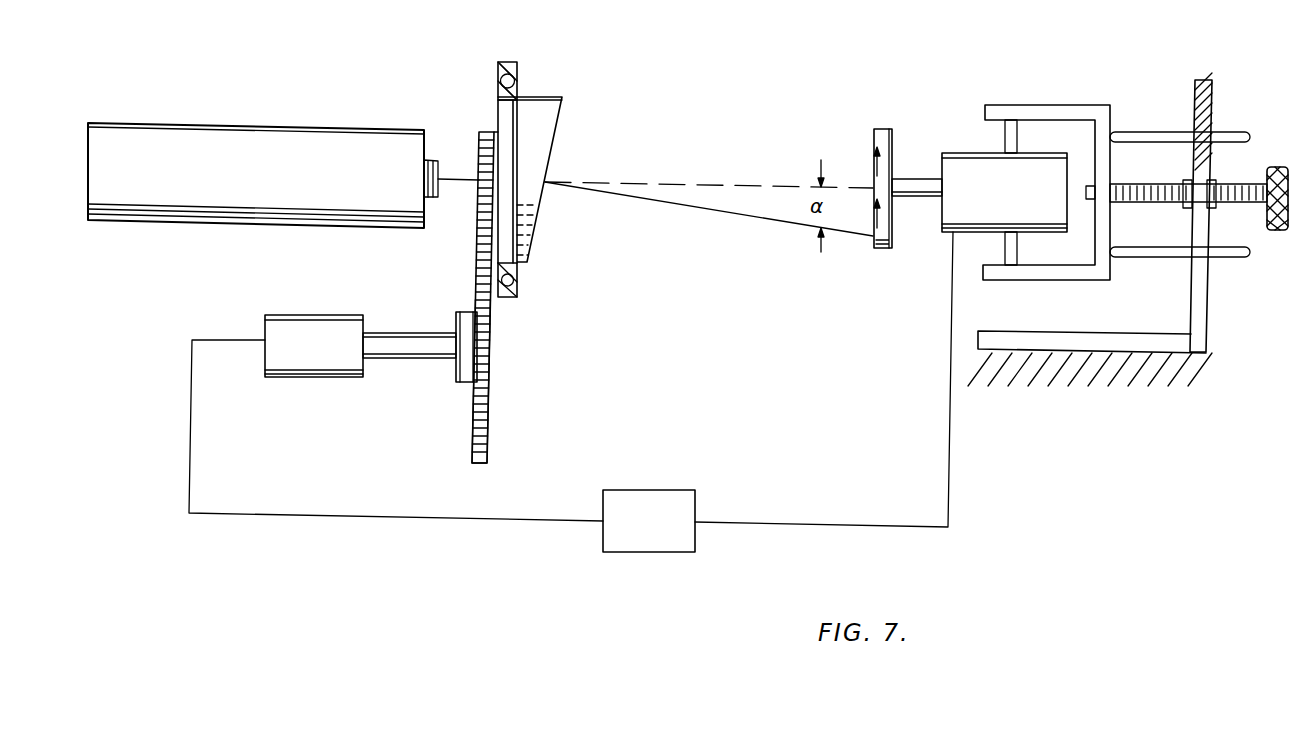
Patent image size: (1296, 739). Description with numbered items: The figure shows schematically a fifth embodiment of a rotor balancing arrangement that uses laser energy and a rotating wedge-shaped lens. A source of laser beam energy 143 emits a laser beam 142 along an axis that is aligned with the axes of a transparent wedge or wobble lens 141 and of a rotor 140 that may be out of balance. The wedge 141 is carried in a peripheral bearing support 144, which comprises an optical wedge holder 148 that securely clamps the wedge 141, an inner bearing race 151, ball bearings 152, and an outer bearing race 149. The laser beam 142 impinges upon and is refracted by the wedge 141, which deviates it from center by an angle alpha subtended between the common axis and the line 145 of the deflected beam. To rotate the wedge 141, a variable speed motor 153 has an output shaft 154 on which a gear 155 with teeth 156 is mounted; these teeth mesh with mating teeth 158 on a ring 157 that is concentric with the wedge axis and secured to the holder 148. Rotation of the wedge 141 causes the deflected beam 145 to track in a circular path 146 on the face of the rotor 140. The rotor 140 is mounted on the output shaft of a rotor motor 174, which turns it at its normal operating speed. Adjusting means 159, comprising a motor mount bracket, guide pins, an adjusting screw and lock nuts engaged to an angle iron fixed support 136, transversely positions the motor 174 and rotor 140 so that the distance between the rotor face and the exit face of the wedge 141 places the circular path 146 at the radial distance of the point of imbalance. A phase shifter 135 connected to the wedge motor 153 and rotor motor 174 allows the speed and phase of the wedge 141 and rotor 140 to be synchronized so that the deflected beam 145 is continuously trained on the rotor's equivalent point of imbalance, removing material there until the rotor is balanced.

The phase shifter 135 is at (657, 503).
The angle iron fixed support 136 is at (1196, 333).
The rotor 140 is at (881, 248).
The transparent wedge 141 is at (552, 142).
The laser beam 142 is at (446, 176).
The source of laser beam energy 143 is at (297, 153).
The peripheral bearing support 144 is at (495, 60).
The deflected beam line 145 is at (700, 208).
The circular path 146 is at (873, 178).
The optical wedge holder 148 is at (498, 92).
The outer bearing race 149 is at (507, 88).
The inner bearing race 151 is at (516, 97).
The ball bearings 152 is at (514, 88).
The motor 153 is at (302, 325).
The output shaft 154 is at (406, 345).
The gear 155 is at (487, 437).
The teeth 156 is at (472, 432).
The ring 157 is at (492, 130).
The mating teeth 158 is at (479, 213).
The adjusting means 159 is at (1150, 106).
The rotor motor 174 is at (963, 170).